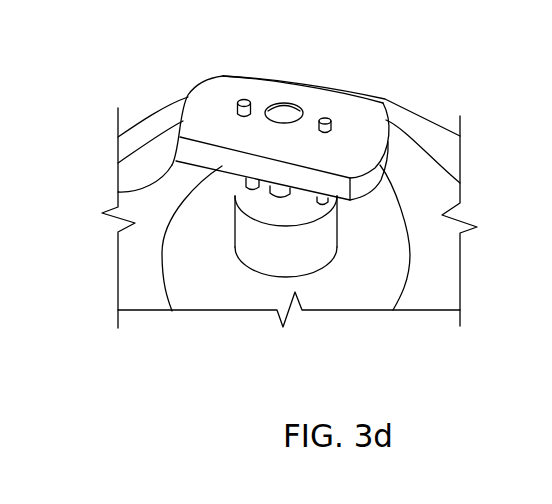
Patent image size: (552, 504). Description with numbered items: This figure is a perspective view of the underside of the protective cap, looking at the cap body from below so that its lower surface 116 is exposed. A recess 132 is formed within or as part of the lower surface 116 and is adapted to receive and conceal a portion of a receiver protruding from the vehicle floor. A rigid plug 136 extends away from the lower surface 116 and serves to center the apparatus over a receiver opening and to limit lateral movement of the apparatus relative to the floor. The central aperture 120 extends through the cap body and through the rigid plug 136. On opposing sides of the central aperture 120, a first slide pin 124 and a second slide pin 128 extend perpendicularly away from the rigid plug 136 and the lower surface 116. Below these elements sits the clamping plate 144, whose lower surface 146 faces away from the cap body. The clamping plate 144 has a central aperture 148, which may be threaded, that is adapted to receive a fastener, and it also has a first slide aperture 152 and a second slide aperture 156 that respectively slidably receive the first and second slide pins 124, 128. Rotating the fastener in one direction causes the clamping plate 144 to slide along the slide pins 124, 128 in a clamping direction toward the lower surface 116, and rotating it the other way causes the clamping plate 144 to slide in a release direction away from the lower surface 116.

The lower surface 116 is at (427, 165).
The central aperture 120 is at (235, 246).
The first slide pin 124 is at (245, 99).
The second slide pin 128 is at (322, 118).
The recess 132 is at (382, 282).
The rigid plug 136 is at (322, 234).
The clamping plate 144 is at (377, 106).
The lower surface 146 is at (188, 123).
The central aperture 148 is at (291, 106).
The first slide aperture 152 is at (118, 192).
The second slide aperture 156 is at (336, 122).